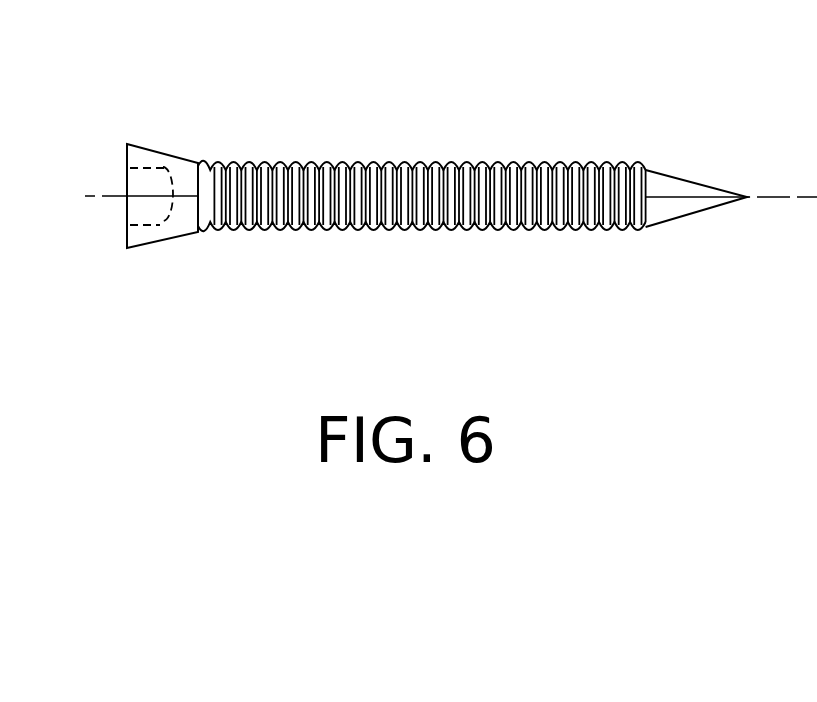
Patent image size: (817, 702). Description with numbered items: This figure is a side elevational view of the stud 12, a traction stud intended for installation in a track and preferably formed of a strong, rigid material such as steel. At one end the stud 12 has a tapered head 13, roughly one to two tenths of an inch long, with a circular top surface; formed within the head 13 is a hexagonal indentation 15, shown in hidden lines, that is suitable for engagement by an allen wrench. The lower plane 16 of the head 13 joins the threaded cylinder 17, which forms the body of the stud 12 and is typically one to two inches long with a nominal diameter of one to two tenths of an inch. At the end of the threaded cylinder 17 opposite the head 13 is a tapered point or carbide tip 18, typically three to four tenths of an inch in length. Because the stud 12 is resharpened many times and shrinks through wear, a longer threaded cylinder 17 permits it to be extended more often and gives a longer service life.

The stud 12 is at (451, 191).
The tapered head 13 is at (155, 150).
The hexagonal indentation 15 is at (160, 168).
The lower plane 16 is at (198, 232).
The threaded cylinder 17 is at (438, 163).
The tapered point or carbide tip 18 is at (670, 207).